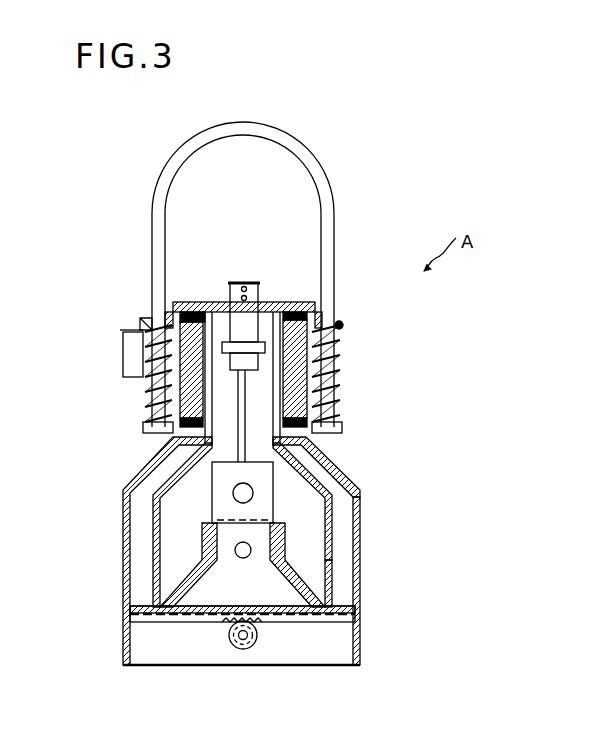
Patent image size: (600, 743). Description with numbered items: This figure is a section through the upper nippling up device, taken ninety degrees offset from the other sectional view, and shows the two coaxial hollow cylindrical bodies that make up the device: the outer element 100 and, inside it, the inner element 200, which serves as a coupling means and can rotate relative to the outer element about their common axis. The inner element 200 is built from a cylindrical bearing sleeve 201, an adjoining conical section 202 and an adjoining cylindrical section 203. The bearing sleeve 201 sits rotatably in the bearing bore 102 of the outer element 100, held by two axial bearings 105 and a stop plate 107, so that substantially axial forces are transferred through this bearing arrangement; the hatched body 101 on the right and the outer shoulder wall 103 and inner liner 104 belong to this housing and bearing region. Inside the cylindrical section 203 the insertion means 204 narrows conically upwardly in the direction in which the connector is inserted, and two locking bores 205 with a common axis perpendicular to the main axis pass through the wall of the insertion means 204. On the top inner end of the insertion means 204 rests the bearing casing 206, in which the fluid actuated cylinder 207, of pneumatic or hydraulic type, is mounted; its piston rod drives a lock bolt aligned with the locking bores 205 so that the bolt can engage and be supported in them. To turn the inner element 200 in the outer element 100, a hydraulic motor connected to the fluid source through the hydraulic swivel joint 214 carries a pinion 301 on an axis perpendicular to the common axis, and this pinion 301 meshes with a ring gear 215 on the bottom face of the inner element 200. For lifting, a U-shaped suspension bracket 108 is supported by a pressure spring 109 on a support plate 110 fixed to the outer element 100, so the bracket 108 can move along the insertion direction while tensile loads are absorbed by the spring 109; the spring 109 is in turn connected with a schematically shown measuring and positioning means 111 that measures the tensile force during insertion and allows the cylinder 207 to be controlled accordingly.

The outer element 100 is at (346, 455).
The cylinder body (right) 101 is at (300, 393).
The bearing bore 102 is at (343, 325).
The housing shoulder wall 103 is at (143, 469).
The inner liner 104 is at (363, 518).
The axial bearings 105 is at (292, 302).
The stop plate 107 is at (207, 302).
The U-shaped suspension bracket 108 is at (313, 168).
The pressure spring 109 is at (148, 390).
The support plate 110 is at (143, 320).
The measuring and positioning means 111 is at (132, 347).
The inner element 200 is at (345, 546).
The cylindrical bearing sleeve 201 is at (320, 375).
The conical section 202 is at (362, 481).
The cylindrical section 203 is at (334, 578).
The insertion means 204 is at (197, 597).
The locking bores 205 is at (243, 558).
The bearing casing 206 is at (276, 488).
The fluid actuated cylinder 207 is at (238, 497).
The hydraulic swivel joint 214 is at (247, 282).
The ring gear 215 is at (346, 618).
The pinion 301 is at (250, 648).